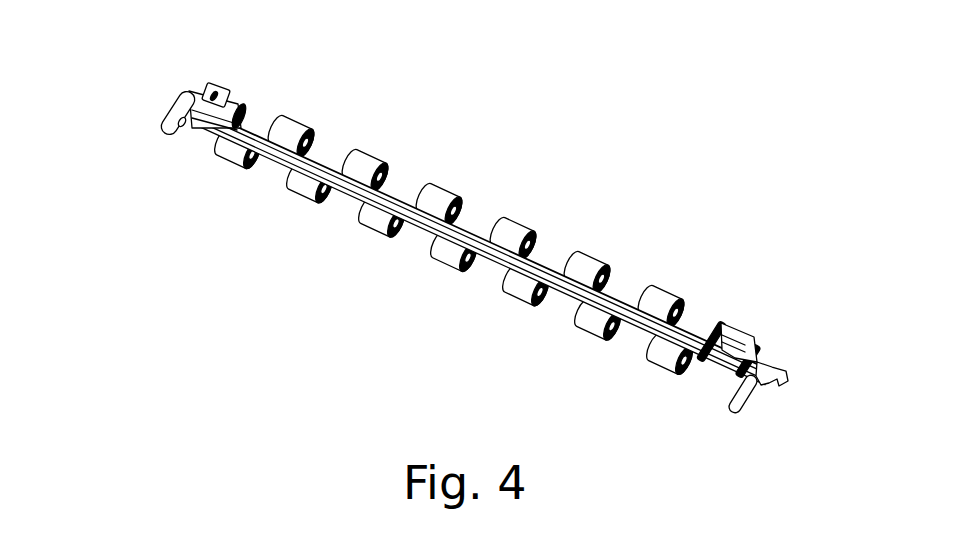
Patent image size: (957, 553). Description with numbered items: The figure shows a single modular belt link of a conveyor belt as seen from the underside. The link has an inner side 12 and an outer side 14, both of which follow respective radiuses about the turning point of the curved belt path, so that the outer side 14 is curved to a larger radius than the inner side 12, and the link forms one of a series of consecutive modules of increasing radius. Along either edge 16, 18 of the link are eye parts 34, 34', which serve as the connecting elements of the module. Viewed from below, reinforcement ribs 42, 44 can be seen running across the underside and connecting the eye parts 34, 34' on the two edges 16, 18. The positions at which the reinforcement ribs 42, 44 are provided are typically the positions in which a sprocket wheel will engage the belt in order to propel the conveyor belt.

The inner side 12 is at (173, 101).
The outer side 14 is at (757, 400).
The edge 16 is at (643, 350).
The edge 18 is at (612, 298).
The eye part 34 is at (764, 312).
The eye part 34' is at (669, 403).
The reinforcement rib 42 is at (243, 112).
The reinforcement rib 44 is at (190, 95).